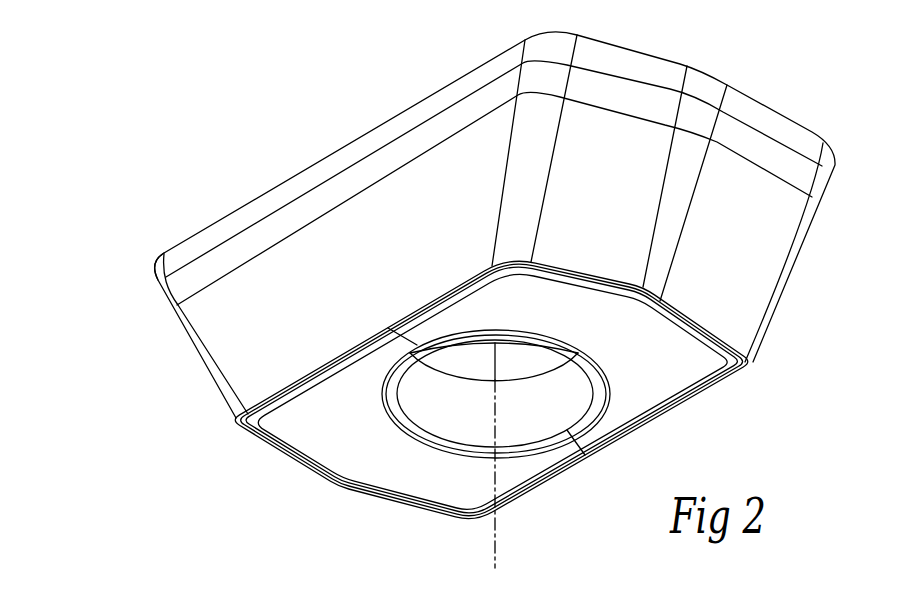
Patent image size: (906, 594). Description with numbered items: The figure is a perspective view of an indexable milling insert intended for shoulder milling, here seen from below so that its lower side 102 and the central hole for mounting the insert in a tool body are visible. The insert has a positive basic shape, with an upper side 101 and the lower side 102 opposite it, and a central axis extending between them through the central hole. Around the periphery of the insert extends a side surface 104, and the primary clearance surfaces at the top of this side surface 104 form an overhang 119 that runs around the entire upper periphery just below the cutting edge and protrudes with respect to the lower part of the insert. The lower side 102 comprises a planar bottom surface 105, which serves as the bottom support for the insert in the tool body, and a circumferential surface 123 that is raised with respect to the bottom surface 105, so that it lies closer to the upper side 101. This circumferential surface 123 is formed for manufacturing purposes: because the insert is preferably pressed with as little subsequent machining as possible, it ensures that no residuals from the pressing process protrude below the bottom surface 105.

The upper side 101 is at (296, 145).
The lower side 102 is at (325, 454).
The side surface 104 is at (383, 260).
The bottom surface 105 is at (661, 383).
The overhang 119 is at (139, 281).
The circumferential surface 123 is at (523, 500).